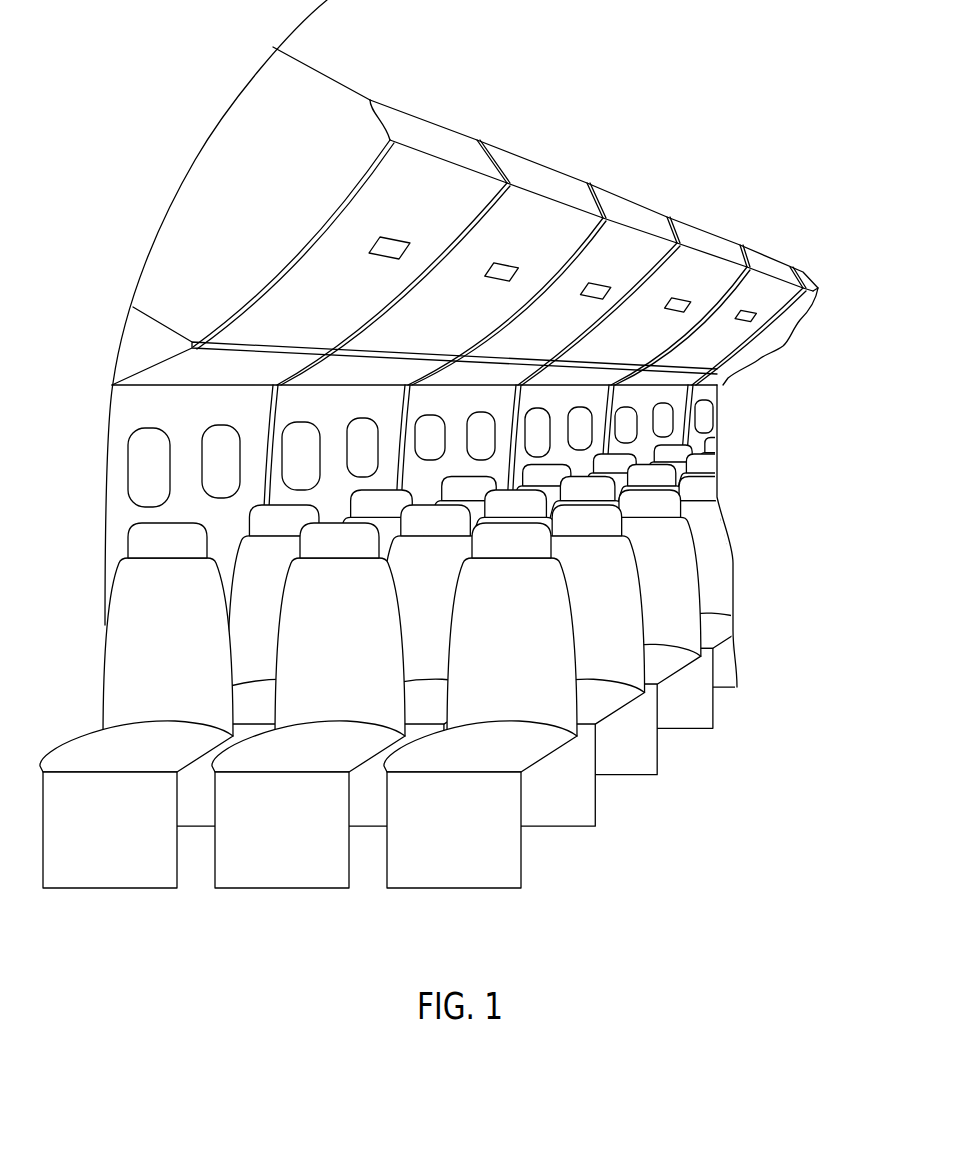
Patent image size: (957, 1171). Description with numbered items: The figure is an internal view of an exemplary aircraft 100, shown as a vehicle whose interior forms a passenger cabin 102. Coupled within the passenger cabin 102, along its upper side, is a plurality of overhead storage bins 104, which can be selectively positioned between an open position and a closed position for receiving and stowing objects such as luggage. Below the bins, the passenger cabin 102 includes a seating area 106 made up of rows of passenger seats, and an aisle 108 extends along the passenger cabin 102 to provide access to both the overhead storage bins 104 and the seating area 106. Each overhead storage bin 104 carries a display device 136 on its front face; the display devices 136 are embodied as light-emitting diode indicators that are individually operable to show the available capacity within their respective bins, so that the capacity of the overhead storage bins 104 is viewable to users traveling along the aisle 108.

The aircraft 100 is at (133, 109).
The passenger cabin 102 is at (789, 412).
The overhead storage bins 104 is at (820, 255).
The seating area 106 is at (740, 493).
The aisle 108 is at (756, 696).
The display device 136 is at (398, 238).